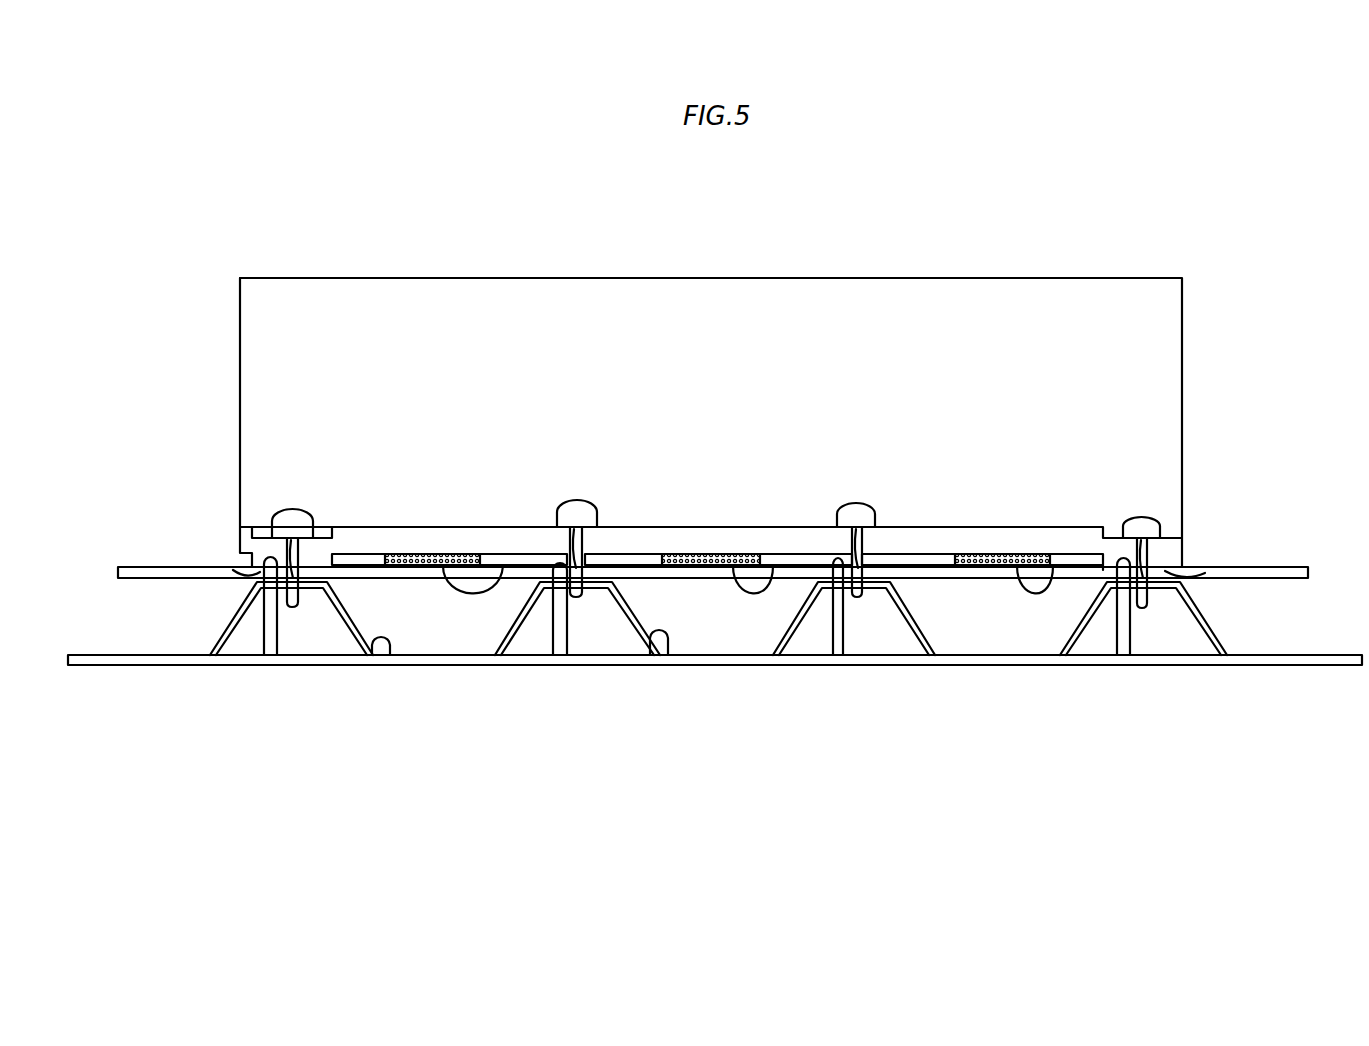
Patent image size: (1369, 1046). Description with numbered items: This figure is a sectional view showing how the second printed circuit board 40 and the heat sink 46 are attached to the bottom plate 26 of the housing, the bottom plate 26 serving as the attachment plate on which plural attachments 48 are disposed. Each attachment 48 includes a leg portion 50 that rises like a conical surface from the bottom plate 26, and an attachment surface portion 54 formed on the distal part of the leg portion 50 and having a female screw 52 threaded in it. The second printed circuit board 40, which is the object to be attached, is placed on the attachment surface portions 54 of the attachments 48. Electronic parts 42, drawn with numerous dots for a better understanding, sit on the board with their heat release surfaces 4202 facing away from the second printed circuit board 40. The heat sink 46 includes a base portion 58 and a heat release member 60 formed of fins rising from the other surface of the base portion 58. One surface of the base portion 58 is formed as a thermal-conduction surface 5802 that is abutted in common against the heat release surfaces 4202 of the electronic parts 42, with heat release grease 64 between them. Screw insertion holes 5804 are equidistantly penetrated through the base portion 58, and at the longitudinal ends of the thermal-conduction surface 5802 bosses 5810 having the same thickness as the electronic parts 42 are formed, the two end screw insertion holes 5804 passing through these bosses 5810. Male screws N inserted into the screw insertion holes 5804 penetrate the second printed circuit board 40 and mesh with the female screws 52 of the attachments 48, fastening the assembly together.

The bottom plate 26 is at (118, 665).
The second printed circuit board 40 is at (152, 565).
The electronic parts 42 is at (717, 460).
The heat sink 46 is at (1003, 276).
The attachments 48 is at (367, 608).
The leg portion 50 is at (387, 665).
The female screw 52 is at (290, 607).
The attachment surface portion 54 is at (264, 655).
The base portion 58 is at (922, 527).
The heat release member 60 is at (1150, 312).
The heat release grease 64 is at (395, 553).
The heat release surfaces 4202 is at (465, 552).
The thermal-conduction surface 5802 is at (507, 565).
The screw insertion holes 5804 is at (300, 518).
The bosses 5810 is at (247, 573).
The male screws N is at (283, 515).